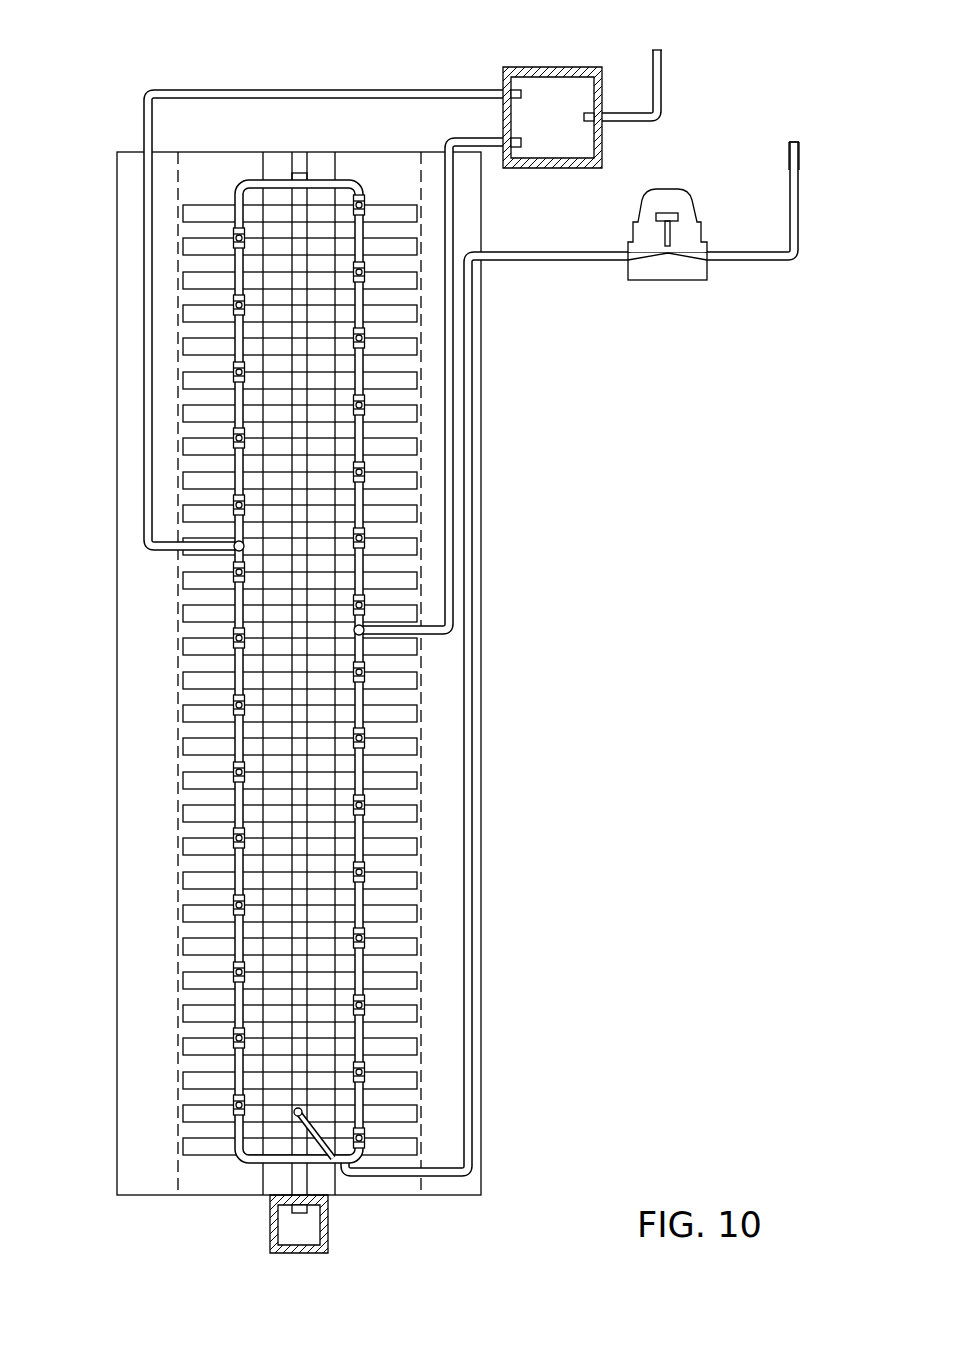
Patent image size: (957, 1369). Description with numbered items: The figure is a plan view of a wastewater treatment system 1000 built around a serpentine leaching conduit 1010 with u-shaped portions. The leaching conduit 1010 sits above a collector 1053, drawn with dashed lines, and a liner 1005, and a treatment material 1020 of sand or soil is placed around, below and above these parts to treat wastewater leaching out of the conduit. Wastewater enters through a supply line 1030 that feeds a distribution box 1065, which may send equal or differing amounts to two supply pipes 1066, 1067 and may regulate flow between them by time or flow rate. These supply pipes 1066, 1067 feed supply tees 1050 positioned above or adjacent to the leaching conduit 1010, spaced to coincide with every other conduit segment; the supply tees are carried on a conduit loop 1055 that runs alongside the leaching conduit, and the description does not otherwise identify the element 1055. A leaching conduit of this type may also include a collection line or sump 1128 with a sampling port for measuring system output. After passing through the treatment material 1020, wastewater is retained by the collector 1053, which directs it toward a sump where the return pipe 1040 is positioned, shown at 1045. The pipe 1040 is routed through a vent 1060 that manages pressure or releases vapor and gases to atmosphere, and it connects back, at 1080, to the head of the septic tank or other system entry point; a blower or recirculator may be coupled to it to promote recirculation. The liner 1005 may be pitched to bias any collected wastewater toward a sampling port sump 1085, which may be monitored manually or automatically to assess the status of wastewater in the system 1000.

The wastewater treatment system 1000 is at (462, 644).
The liner 1005 is at (143, 683).
The leaching conduit 1010 is at (415, 730).
The treatment material 1020 is at (448, 665).
The supply line 1030 is at (662, 55).
The pipe 1040 is at (590, 264).
The sump area position of pipe 1045 is at (296, 1117).
The supply tees 1050 is at (366, 808).
The collector 1053 is at (178, 1177).
The tube loop 1055 is at (356, 186).
The vent 1060 is at (668, 188).
The distribution box 1065 is at (553, 67).
The supply pipe 1066 is at (147, 333).
The supply pipe 1067 is at (455, 363).
The connection point of pipe to system entry 1080 is at (800, 148).
The sampling port sump 1085 is at (330, 1235).
The collection line/sump 1128 is at (285, 163).